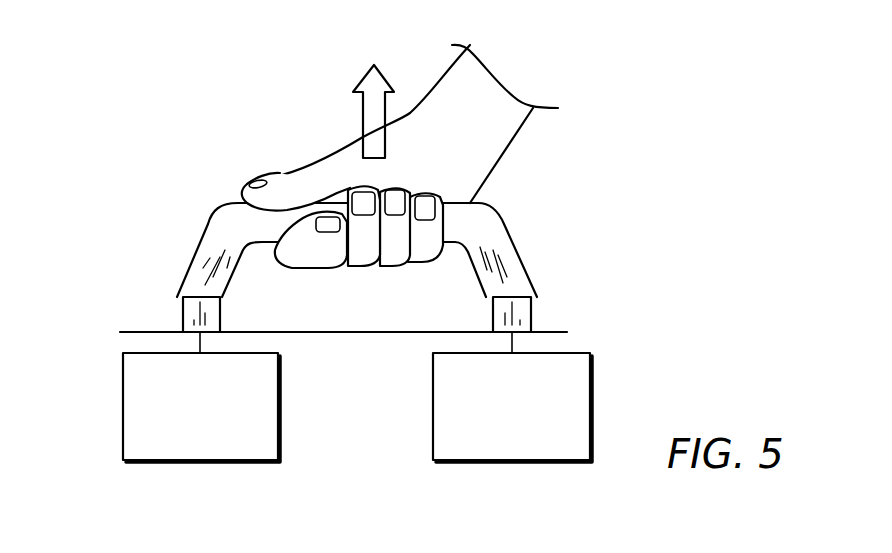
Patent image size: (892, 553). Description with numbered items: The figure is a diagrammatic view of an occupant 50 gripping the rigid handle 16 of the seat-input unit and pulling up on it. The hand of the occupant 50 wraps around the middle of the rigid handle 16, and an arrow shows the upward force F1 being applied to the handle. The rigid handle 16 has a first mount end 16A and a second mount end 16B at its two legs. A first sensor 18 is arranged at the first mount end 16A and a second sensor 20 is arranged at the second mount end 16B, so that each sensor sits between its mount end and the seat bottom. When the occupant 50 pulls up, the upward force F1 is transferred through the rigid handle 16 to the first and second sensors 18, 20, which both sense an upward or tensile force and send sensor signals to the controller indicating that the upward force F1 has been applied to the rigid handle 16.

The rigid handle 16 is at (498, 240).
The first mount end 16A is at (198, 317).
The second mount end 16B is at (518, 318).
The first sensor 18 is at (123, 385).
The second sensor 20 is at (433, 385).
The occupant 50 is at (488, 128).
The upward force F1 is at (378, 82).